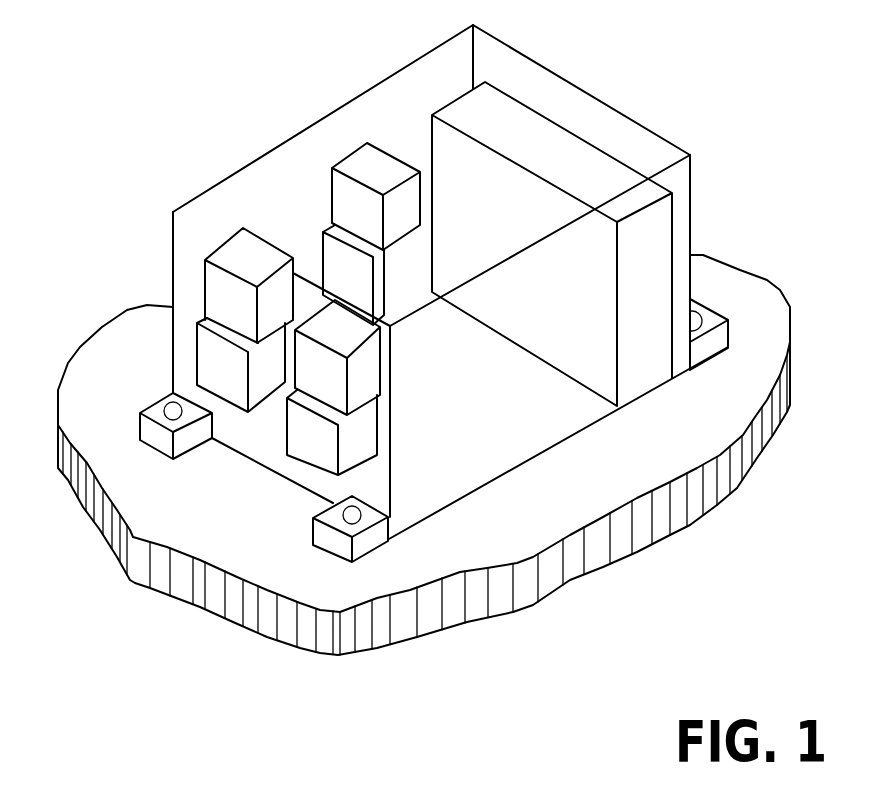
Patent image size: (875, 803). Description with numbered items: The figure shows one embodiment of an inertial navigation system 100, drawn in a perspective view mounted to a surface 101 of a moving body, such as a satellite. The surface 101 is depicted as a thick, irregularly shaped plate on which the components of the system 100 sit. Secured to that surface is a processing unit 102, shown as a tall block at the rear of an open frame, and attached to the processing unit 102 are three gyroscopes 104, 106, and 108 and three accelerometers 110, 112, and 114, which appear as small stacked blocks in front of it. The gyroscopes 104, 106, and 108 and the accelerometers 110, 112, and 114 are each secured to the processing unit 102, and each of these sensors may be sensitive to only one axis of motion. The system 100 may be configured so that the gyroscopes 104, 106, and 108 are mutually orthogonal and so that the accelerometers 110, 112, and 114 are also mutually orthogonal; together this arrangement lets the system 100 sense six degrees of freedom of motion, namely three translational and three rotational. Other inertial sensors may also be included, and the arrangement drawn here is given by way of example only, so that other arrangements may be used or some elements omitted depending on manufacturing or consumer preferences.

The inertial navigation system 100 is at (120, 80).
The surface 101 is at (633, 478).
The processing unit 102 is at (558, 153).
The gyroscope 104 is at (257, 311).
The gyroscope 106 is at (247, 384).
The gyroscope 108 is at (383, 225).
The accelerometer 110 is at (338, 454).
The accelerometer 112 is at (345, 387).
The accelerometer 114 is at (372, 290).